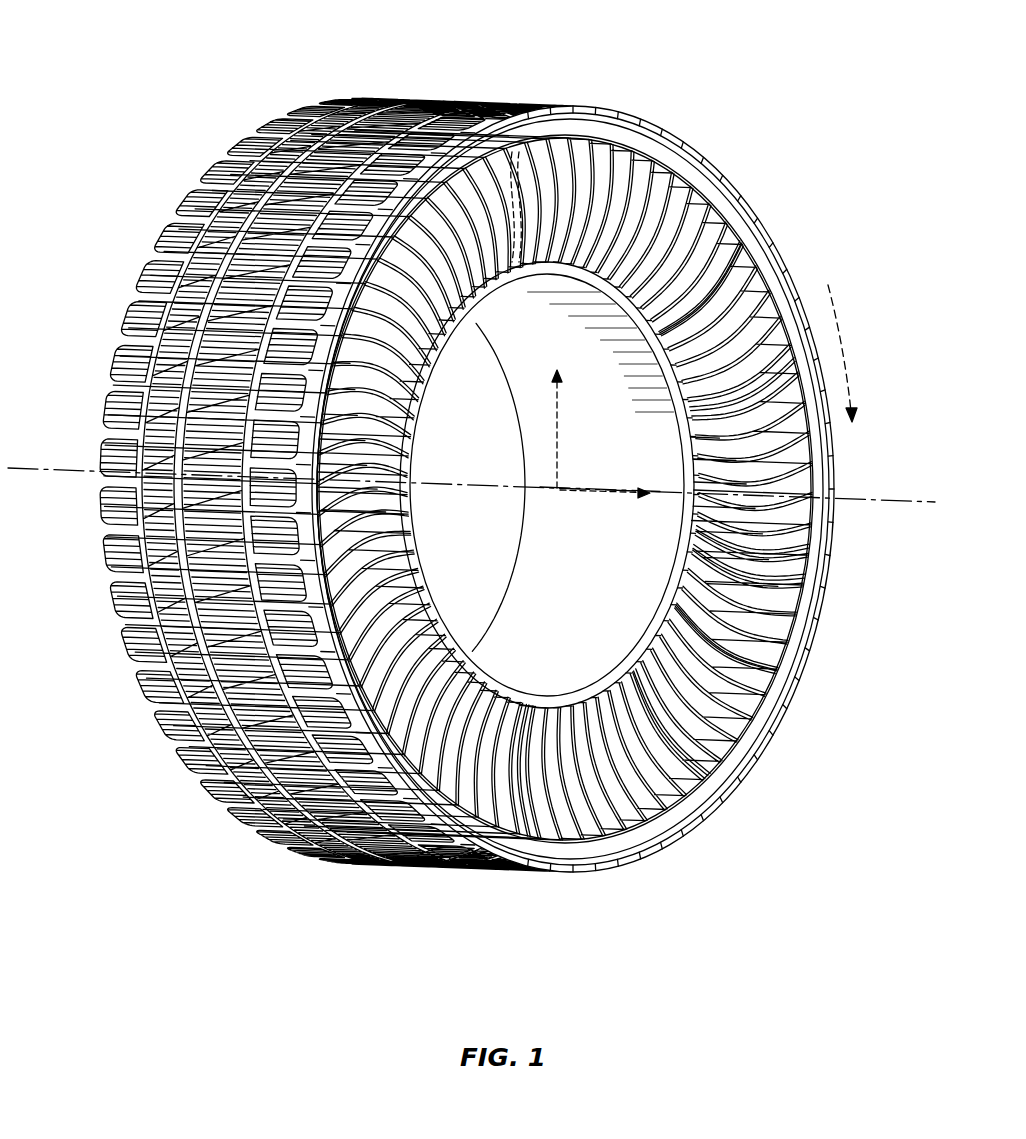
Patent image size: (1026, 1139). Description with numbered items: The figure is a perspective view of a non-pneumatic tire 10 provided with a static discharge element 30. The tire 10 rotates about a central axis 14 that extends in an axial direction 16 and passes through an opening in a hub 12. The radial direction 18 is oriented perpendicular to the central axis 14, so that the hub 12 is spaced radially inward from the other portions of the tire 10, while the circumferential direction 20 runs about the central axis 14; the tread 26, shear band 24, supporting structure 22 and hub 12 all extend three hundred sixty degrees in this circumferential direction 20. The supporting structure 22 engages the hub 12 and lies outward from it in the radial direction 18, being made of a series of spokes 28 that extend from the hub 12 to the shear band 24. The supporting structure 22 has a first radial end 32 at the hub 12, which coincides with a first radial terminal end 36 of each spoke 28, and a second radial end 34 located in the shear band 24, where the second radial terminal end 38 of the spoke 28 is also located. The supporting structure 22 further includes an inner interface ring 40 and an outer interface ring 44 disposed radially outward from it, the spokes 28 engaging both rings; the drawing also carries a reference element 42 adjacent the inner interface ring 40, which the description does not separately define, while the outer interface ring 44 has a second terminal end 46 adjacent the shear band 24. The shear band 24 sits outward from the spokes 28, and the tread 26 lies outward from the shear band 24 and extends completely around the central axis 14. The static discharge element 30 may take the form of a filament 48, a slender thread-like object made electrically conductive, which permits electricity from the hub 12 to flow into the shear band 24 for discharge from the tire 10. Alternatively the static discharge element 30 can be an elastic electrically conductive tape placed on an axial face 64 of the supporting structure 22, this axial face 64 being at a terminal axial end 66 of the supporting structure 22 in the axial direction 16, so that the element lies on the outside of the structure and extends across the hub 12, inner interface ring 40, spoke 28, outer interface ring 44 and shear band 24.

The non-pneumatic tire 10 is at (214, 57).
The hub 12 is at (445, 640).
The central axis 14 is at (880, 500).
The axial direction 16 is at (614, 502).
The radial direction 18 is at (558, 418).
The circumferential direction 20 is at (842, 352).
The supporting structure 22 is at (720, 253).
The shear band 24 is at (758, 708).
The tread 26 is at (316, 850).
The spoke 28 is at (690, 745).
The static discharge element 30 is at (520, 172).
The first radial end 32 is at (620, 292).
The second radial end 34 is at (680, 205).
The first radial terminal end 36 is at (625, 676).
The second radial terminal end 38 is at (652, 830).
The inner interface ring 40 is at (680, 385).
The hub connection 42 is at (692, 418).
The outer interface ring 44 is at (748, 656).
The second terminal end 46 is at (733, 268).
The filament 48 is at (524, 215).
The axial face 64 is at (778, 549).
The terminal axial end 66 is at (786, 547).